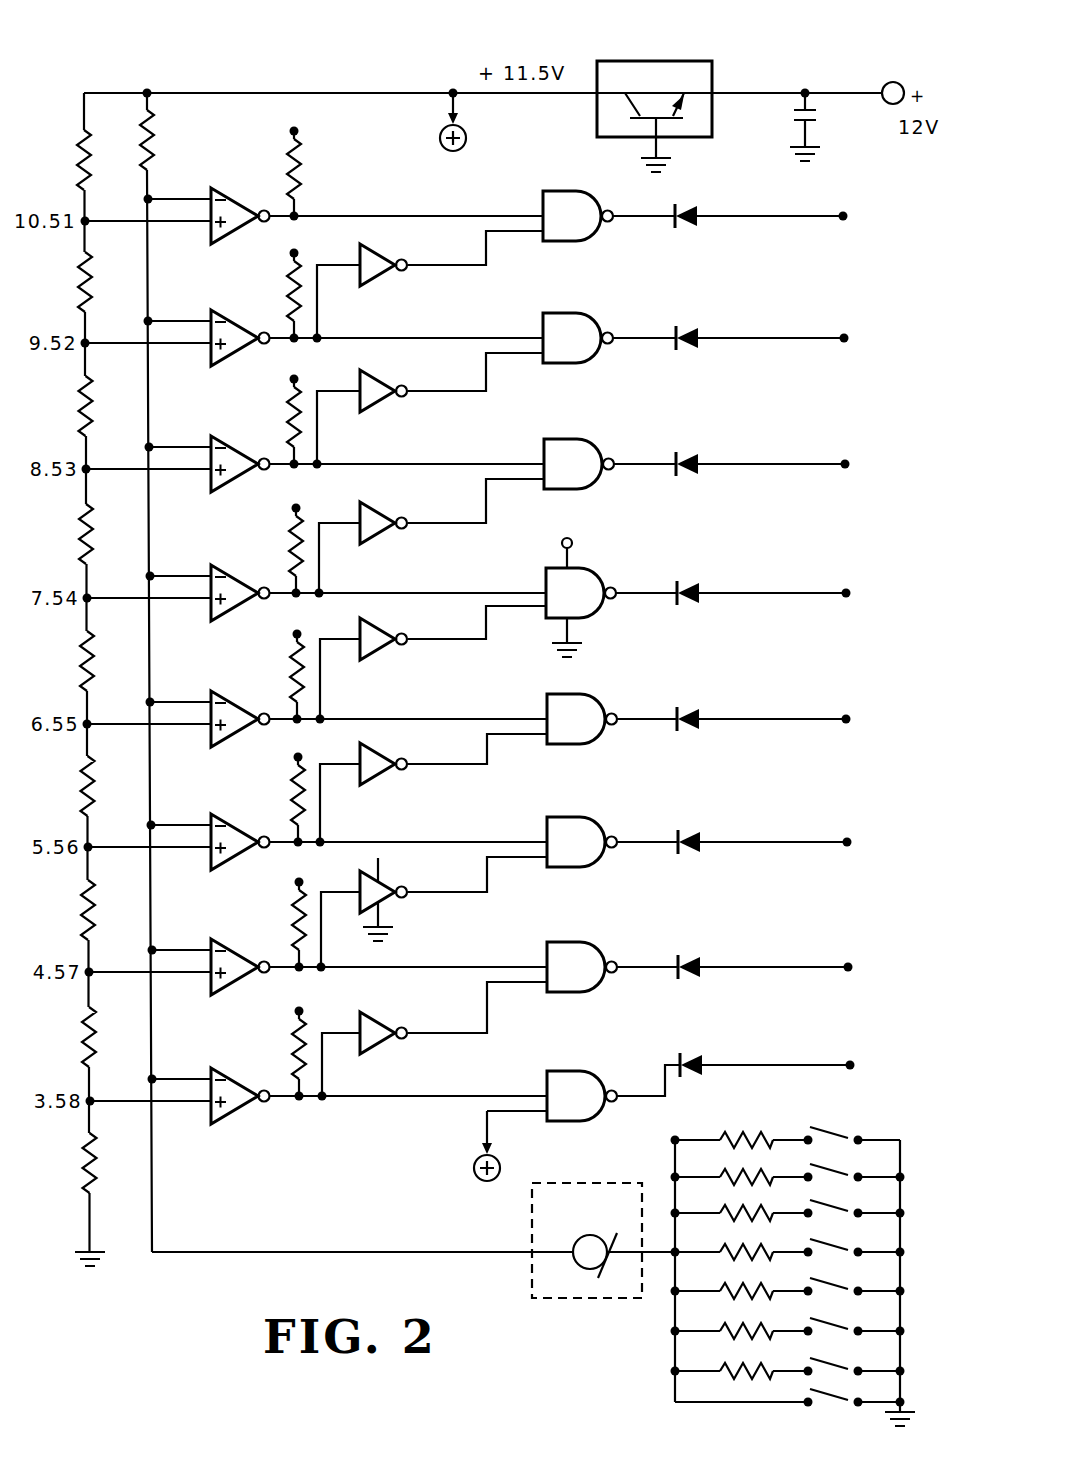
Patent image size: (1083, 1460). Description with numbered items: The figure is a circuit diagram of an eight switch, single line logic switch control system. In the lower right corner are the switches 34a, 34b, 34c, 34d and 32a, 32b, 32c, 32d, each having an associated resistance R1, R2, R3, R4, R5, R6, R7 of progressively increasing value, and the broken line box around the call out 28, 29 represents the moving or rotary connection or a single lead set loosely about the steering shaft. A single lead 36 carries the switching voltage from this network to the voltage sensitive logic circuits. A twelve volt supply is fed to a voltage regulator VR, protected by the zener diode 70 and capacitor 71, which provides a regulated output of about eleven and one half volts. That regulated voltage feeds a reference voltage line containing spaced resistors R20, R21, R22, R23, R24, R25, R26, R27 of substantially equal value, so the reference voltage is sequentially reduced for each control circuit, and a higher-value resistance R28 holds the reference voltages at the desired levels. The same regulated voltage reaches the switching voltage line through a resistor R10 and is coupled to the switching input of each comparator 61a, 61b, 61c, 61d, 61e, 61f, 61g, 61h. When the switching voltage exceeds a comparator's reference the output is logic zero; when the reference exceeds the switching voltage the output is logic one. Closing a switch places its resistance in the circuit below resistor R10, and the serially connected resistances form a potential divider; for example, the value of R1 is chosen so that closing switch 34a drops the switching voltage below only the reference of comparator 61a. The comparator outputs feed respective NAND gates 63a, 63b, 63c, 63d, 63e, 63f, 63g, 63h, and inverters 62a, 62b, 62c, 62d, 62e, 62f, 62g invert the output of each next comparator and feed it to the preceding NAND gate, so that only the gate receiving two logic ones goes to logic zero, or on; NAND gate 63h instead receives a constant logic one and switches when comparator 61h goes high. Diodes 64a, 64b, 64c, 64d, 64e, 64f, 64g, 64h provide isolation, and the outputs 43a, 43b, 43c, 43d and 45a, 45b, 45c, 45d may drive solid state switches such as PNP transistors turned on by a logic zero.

The resistor R10 is at (153, 168).
The resistor R20 is at (100, 156).
The resistor R21 is at (101, 288).
The resistor R22 is at (102, 410).
The resistor R23 is at (103, 540).
The resistor R24 is at (104, 665).
The resistor R25 is at (105, 790).
The resistor R26 is at (105, 914).
The resistor R27 is at (106, 1040).
The resistance R28 is at (107, 1168).
The comparator 61a is at (251, 178).
The comparator 61b is at (240, 327).
The comparator 61c is at (240, 453).
The comparator 61d is at (240, 582).
The comparator 61e is at (240, 708).
The comparator 61f is at (240, 831).
The comparator 61g is at (240, 956).
The comparator 61h is at (240, 1085).
The inverter 62a is at (377, 284).
The inverter 62b is at (377, 410).
The inverter 62c is at (377, 542).
The inverter 62d is at (377, 658).
The inverter 62e is at (377, 783).
The inverter 62f is at (384, 905).
The inverter 62g is at (377, 1052).
The NAND gate 63a is at (596, 190).
The NAND gate 63b is at (589, 315).
The NAND gate 63c is at (592, 444).
The NAND gate 63d is at (592, 573).
The NAND gate 63e is at (590, 697).
The NAND gate 63f is at (592, 823).
The NAND gate 63g is at (592, 950).
The NAND gate 63h is at (596, 1073).
The diode 64a is at (700, 213).
The diode 64b is at (701, 336).
The diode 64c is at (701, 462).
The diode 64d is at (702, 590).
The diode 64e is at (702, 717).
The diode 64f is at (703, 839).
The diode 64g is at (703, 964).
The diode 64h is at (705, 1062).
The output 43a is at (798, 216).
The output 43b is at (801, 339).
The output 43c is at (800, 465).
The output 43d is at (802, 594).
The output 45a is at (802, 720).
The output 45b is at (803, 843).
The output 45c is at (802, 968).
The output 45d is at (804, 1065).
The zener diode 70 is at (704, 62).
The capacitor 71 is at (822, 120).
The moving or rotary connection 28 is at (587, 1240).
The moving or rotary connection 29 is at (578, 1238).
The lead 36 is at (425, 1253).
The resistance R1 is at (742, 1133).
The resistance R2 is at (742, 1170).
The resistance R3 is at (742, 1206).
The resistance R4 is at (742, 1245).
The resistance R5 is at (742, 1284).
The resistance R6 is at (742, 1324).
The resistance R7 is at (742, 1364).
The switch 34a is at (852, 1131).
The switch 34b is at (852, 1168).
The switch 34c is at (852, 1204).
The switch 34d is at (852, 1243).
The switch 32a is at (852, 1282).
The switch 32b is at (852, 1322).
The switch 32c is at (852, 1362).
The switch 32d is at (852, 1395).